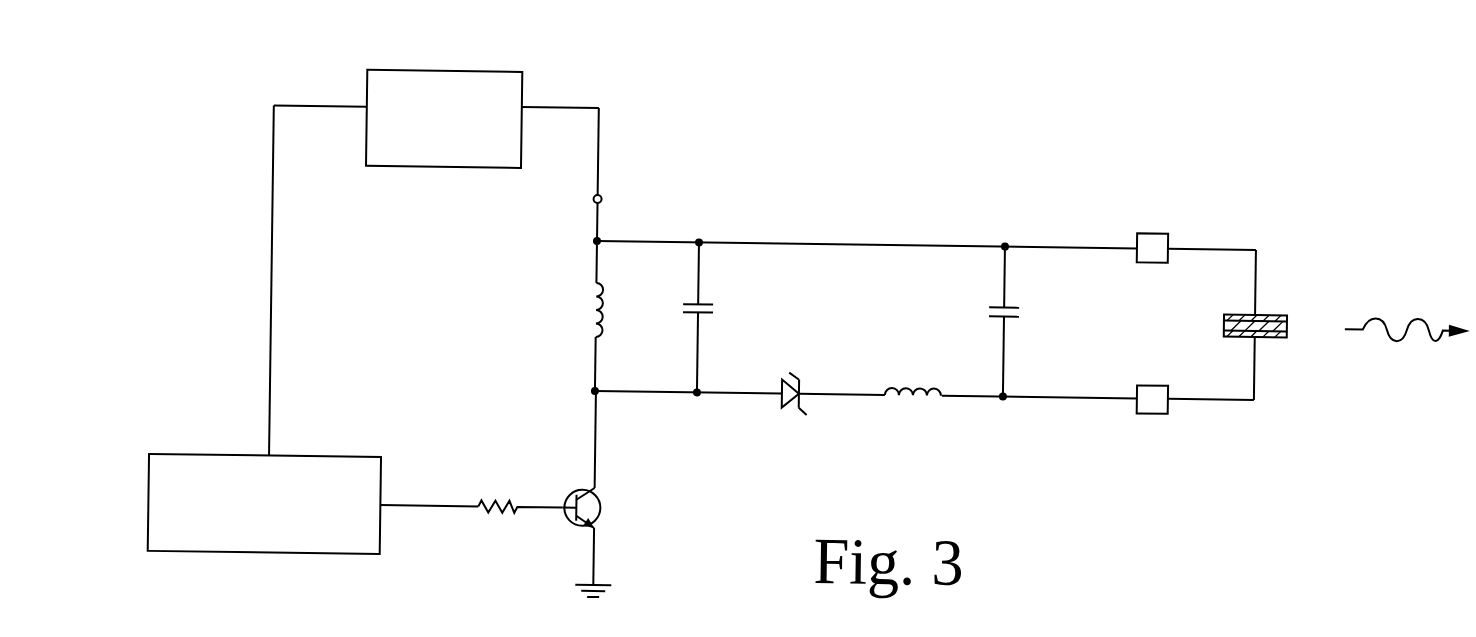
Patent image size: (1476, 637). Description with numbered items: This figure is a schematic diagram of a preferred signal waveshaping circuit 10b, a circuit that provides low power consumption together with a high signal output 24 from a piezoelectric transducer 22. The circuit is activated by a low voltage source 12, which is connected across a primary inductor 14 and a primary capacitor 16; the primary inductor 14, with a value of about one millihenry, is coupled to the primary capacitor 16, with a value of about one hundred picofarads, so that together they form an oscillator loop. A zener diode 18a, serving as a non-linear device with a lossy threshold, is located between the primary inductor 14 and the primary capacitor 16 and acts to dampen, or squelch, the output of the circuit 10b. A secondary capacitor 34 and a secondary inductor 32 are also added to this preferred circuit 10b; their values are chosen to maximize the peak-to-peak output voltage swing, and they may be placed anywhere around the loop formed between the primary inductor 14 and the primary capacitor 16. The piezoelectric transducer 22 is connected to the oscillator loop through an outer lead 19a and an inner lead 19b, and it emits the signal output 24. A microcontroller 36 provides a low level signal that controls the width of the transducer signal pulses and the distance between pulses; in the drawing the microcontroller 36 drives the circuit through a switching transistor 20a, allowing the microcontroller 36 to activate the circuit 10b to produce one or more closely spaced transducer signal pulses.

The preferred signal waveshaping circuit 10b is at (878, 214).
The low voltage source 12 is at (430, 73).
The primary inductor 14 is at (594, 318).
The secondary capacitor 34 is at (758, 308).
The primary capacitor 16 is at (997, 298).
The zener diode 18a is at (791, 405).
The secondary inductor 32 is at (920, 396).
The outer lead 19a is at (1210, 241).
The inner lead 19b is at (1222, 391).
The piezoelectric transducer 22 is at (1276, 306).
The signal output 24 is at (1400, 311).
The microcontroller 36 is at (350, 460).
The transistor Q1 switch 20a is at (574, 492).